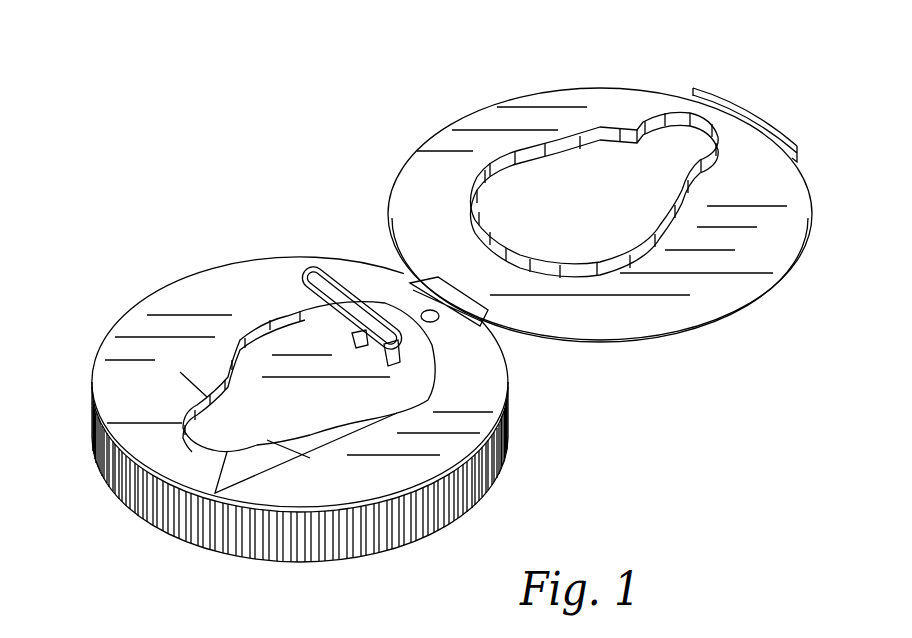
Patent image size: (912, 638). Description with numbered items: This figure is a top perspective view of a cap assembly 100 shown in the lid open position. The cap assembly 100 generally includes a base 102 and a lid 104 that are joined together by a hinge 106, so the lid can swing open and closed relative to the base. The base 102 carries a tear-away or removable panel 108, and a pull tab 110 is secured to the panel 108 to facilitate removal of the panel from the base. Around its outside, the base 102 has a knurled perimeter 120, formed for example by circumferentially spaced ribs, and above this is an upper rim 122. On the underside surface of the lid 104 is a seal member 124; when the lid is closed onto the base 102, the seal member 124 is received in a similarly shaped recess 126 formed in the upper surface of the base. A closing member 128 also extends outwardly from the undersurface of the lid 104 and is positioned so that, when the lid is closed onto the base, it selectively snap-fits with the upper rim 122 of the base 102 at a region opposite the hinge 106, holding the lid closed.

The cap assembly 100 is at (226, 161).
The base 102 is at (177, 325).
The lid 104 is at (663, 302).
The hinge 106 is at (450, 300).
The removable panel 108 is at (305, 418).
The pull tab 110 is at (338, 272).
The knurled perimeter 120 is at (445, 490).
The upper rim 122 is at (105, 423).
The seal member 124 is at (590, 128).
The recess 126 is at (283, 305).
The closing member 128 is at (755, 112).